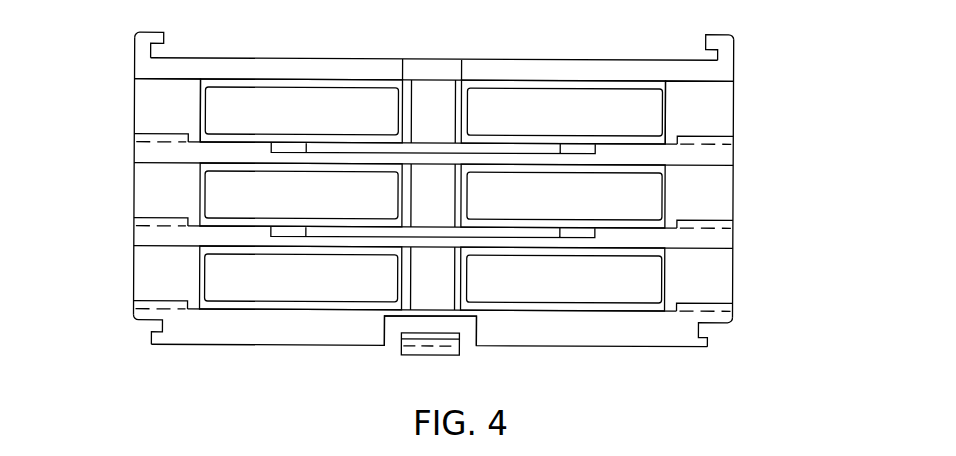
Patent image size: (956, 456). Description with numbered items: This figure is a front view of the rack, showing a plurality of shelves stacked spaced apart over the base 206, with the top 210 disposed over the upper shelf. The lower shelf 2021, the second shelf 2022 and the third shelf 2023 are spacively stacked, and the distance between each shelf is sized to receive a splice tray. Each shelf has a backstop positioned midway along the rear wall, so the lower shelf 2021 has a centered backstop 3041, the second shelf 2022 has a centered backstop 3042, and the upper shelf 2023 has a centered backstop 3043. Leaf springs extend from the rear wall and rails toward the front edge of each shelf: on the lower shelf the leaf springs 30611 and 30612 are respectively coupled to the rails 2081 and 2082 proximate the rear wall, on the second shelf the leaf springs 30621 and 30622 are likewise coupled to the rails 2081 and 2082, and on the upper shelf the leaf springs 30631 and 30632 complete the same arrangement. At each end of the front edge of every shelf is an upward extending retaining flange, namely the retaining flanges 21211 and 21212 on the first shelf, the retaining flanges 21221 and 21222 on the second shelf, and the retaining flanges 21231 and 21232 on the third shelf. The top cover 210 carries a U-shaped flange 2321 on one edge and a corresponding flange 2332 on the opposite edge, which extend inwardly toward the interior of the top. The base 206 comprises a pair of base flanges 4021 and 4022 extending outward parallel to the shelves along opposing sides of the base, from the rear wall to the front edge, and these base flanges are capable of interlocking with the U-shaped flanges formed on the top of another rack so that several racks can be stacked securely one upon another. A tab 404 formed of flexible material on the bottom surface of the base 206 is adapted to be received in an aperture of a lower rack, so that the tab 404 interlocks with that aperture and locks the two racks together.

The U-shaped flange 2321 is at (153, 33).
The upper mounting hook 2332 is at (726, 33).
The top cover 210 is at (148, 72).
The rail 2081 is at (162, 108).
The rail 2082 is at (733, 123).
The leaf spring 30631 is at (340, 126).
The leaf spring 30632 is at (618, 127).
The leaf spring 30621 is at (340, 213).
The leaf spring 30622 is at (618, 214).
The leaf spring 30611 is at (340, 295).
The leaf spring 30612 is at (618, 297).
The backstop 3043 is at (453, 130).
The backstop 3042 is at (453, 218).
The backstop 3041 is at (453, 303).
The retaining flange 21231 is at (147, 137).
The retaining flange 21232 is at (720, 142).
The retaining flange 21221 is at (143, 223).
The retaining flange 21222 is at (720, 222).
The retaining flange 21211 is at (142, 305).
The retaining flange 21212 is at (726, 307).
The shelf 2023 is at (147, 148).
The shelf 2022 is at (142, 235).
The shelf 2021 is at (222, 318).
The base 206 is at (663, 338).
The base flange 4021 is at (155, 345).
The base flange 4022 is at (708, 340).
The tab 404 is at (443, 355).